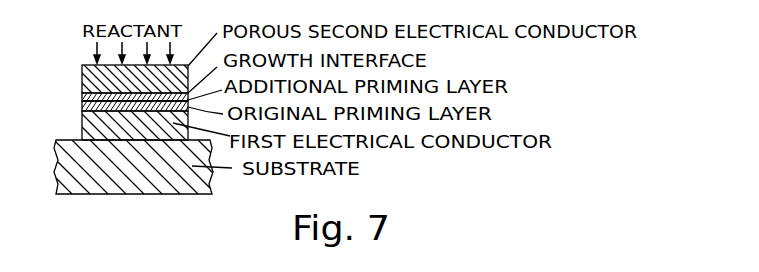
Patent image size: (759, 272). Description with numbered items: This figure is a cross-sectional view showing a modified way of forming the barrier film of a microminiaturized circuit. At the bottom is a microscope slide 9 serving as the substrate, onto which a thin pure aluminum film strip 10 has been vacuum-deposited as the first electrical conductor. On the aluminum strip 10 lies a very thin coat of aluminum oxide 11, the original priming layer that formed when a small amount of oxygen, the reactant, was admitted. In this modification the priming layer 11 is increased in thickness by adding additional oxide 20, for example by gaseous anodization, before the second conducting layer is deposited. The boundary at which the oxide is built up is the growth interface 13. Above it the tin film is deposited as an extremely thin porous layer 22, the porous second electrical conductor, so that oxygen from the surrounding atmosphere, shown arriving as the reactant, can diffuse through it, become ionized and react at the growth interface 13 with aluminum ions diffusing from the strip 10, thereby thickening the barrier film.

The porous tin film layer 22 is at (82, 72).
The growth interface 13 is at (82, 97).
The additional oxide 20 is at (82, 100).
The aluminum oxide priming layer 11 is at (82, 109).
The aluminum film strip 10 is at (95, 123).
The microscope slide 9 is at (65, 160).